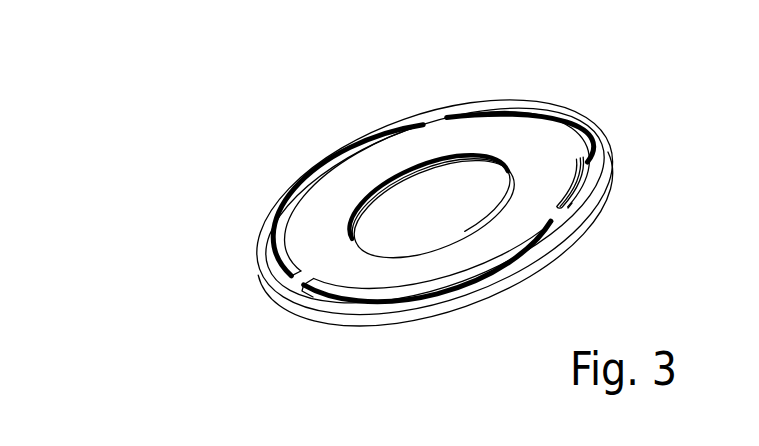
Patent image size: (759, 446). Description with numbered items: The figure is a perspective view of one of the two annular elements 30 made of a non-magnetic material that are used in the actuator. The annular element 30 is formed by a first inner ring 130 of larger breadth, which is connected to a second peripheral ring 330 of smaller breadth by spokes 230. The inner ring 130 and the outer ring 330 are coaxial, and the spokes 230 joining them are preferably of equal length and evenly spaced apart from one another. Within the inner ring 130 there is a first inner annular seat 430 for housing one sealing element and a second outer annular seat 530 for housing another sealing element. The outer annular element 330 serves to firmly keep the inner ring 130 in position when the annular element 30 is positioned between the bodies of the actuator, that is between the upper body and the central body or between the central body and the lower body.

The annular element 30 is at (445, 205).
The first inner ring 130 is at (349, 185).
The spokes 230 is at (433, 120).
The second peripheral ring 330 is at (590, 135).
The first inner annular seat 430 is at (445, 178).
The second outer annular seat 530 is at (573, 188).